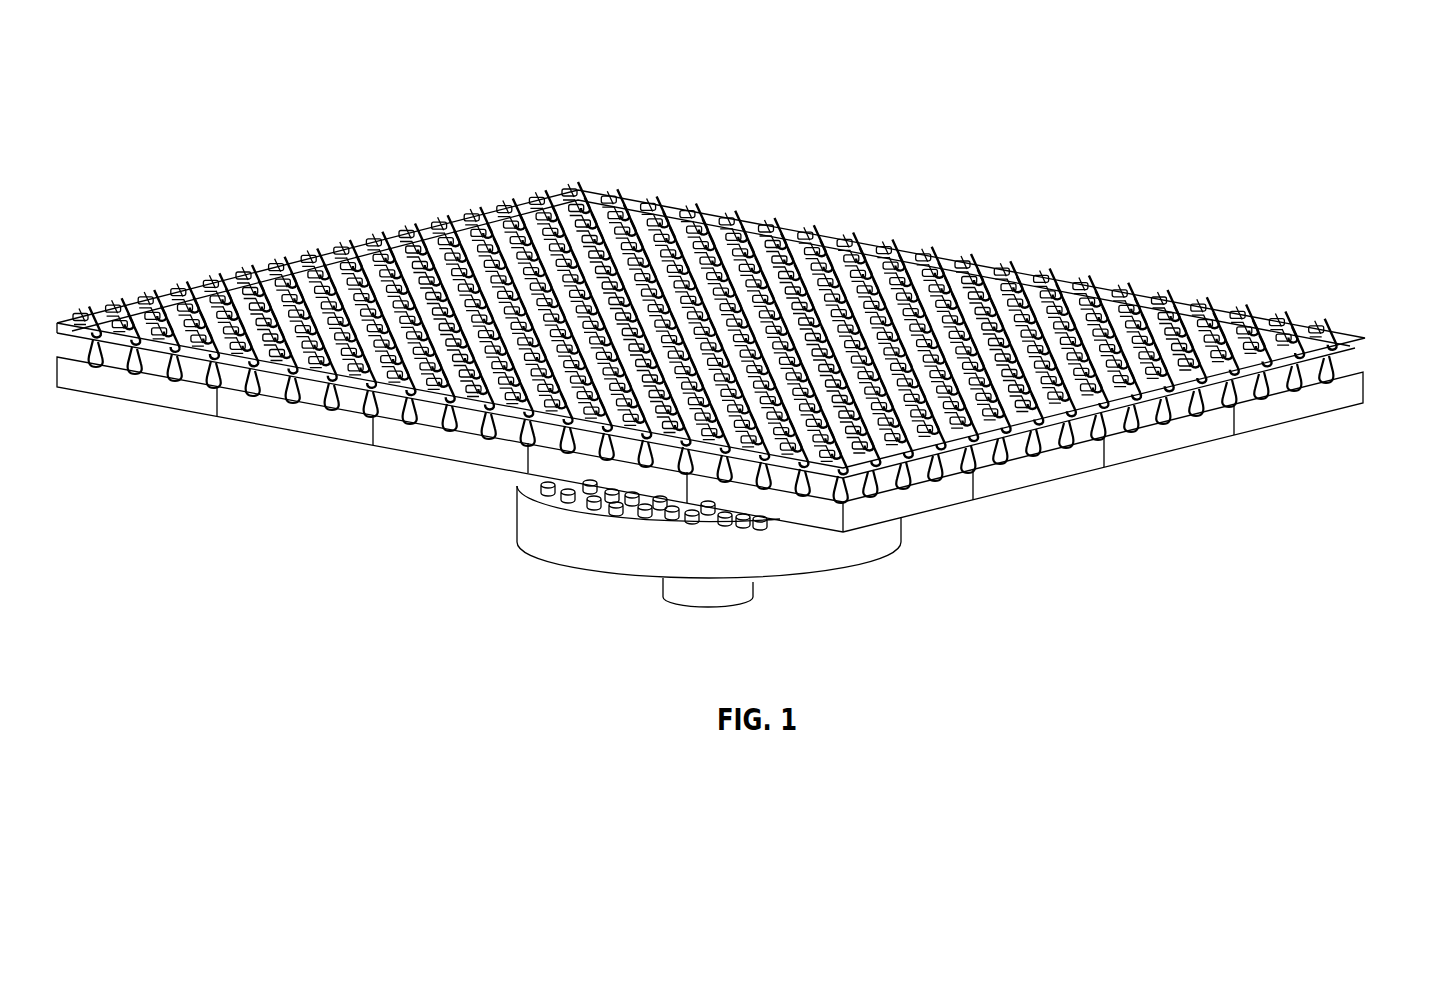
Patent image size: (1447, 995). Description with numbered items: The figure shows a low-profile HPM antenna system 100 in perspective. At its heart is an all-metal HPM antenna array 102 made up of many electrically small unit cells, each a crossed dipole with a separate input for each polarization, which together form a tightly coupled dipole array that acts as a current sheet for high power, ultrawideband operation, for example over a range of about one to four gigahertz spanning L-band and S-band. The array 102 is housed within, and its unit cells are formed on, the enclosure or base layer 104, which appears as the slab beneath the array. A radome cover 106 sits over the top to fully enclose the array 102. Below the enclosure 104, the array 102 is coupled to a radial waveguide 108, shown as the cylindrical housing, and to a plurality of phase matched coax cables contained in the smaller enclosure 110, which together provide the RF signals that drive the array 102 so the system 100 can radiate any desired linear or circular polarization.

The low-profile HPM antenna system 100 is at (247, 121).
The all-metal HPM antenna array 102 is at (1345, 362).
The enclosure 104 is at (1170, 440).
The radome cover 106 is at (1264, 322).
The radial waveguide 108 is at (815, 557).
The enclosure for phase matched coax cables 110 is at (738, 600).